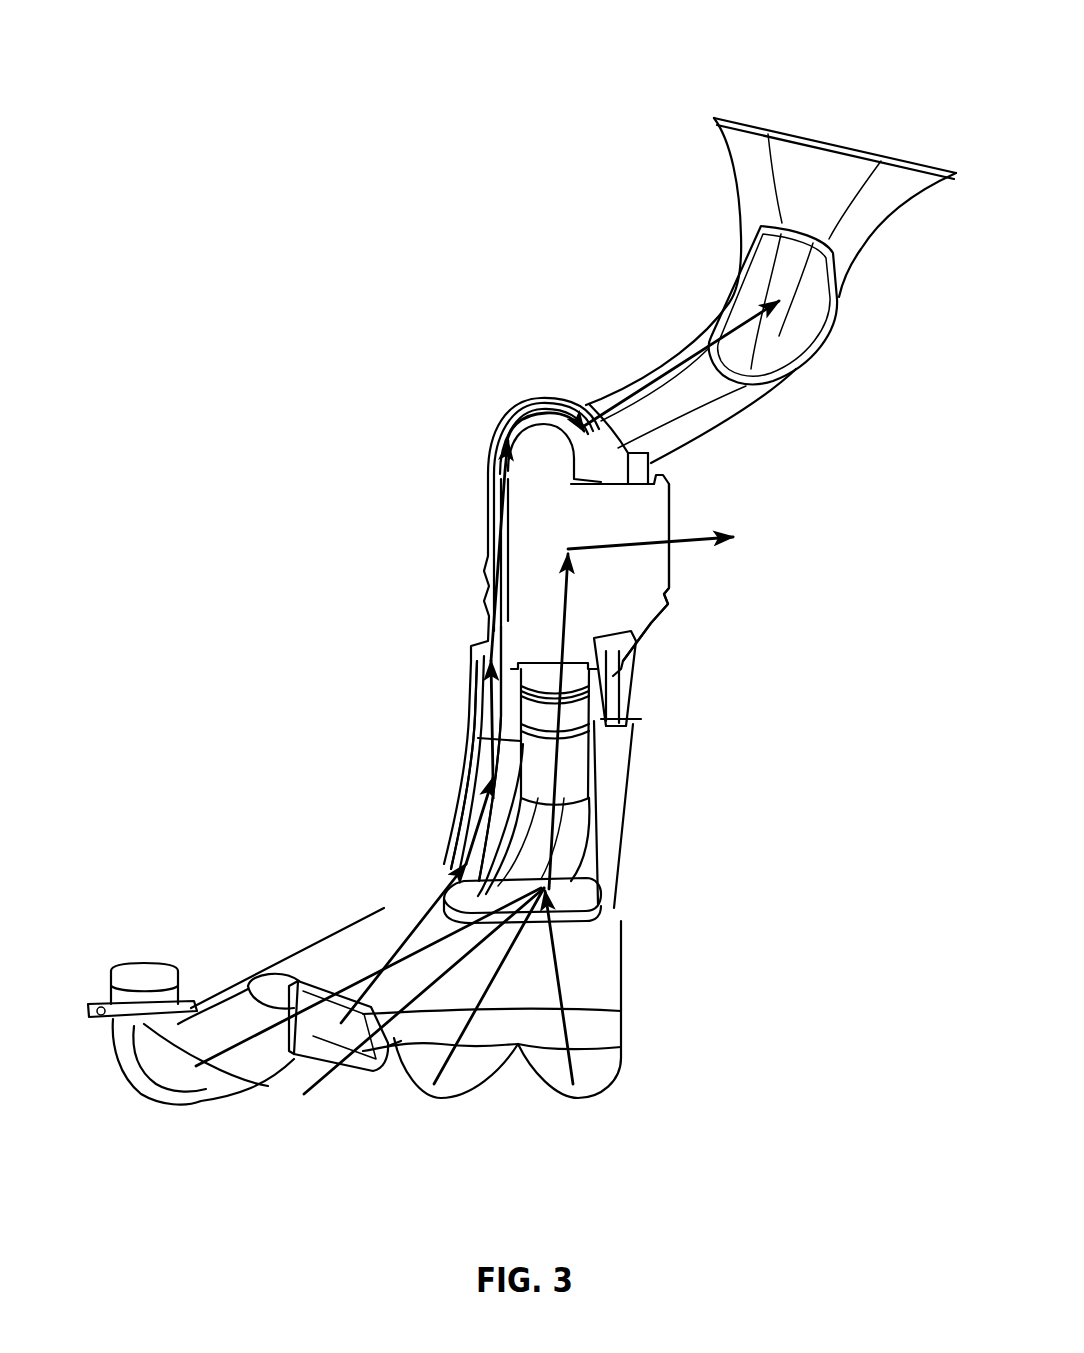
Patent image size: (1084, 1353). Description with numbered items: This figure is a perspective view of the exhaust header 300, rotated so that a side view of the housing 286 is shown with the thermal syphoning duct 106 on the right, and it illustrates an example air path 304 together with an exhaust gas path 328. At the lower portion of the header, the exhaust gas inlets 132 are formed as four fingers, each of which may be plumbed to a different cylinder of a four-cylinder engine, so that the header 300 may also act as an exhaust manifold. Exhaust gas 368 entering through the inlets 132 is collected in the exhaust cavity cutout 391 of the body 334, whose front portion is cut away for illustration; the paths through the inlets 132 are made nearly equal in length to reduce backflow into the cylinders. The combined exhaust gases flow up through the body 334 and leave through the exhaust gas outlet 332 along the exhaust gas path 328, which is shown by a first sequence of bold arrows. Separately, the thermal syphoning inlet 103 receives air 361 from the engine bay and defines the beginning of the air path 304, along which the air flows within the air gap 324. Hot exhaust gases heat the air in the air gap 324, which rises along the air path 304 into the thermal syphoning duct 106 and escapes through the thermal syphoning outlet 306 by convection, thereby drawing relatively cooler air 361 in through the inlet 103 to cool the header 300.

The thermal syphoning outlet 306 is at (778, 300).
The thermal syphoning duct 106 is at (733, 272).
The air path 304 is at (650, 380).
The exhaust header 300 is at (290, 427).
The housing 286 is at (553, 507).
The exhaust gas path 328 is at (733, 794).
The exhaust gas outlet 332 is at (670, 570).
The air gap 324 is at (472, 728).
The exhaust gas inlets 132 is at (135, 968).
The body 334 is at (573, 748).
The exhaust cavity cutout 391 is at (582, 857).
The thermal syphoning inlet 103 is at (262, 985).
The exhaust gas 368 is at (300, 1097).
The air 361 is at (342, 1030).